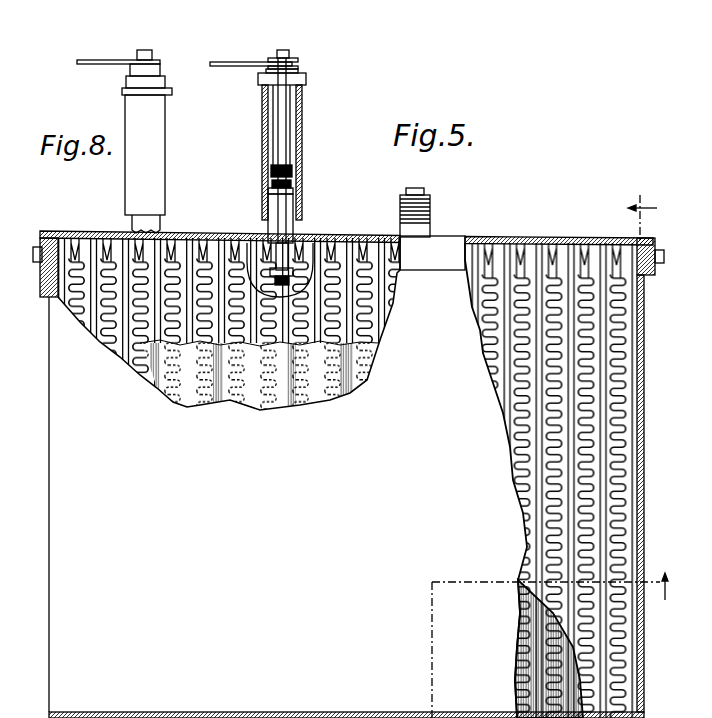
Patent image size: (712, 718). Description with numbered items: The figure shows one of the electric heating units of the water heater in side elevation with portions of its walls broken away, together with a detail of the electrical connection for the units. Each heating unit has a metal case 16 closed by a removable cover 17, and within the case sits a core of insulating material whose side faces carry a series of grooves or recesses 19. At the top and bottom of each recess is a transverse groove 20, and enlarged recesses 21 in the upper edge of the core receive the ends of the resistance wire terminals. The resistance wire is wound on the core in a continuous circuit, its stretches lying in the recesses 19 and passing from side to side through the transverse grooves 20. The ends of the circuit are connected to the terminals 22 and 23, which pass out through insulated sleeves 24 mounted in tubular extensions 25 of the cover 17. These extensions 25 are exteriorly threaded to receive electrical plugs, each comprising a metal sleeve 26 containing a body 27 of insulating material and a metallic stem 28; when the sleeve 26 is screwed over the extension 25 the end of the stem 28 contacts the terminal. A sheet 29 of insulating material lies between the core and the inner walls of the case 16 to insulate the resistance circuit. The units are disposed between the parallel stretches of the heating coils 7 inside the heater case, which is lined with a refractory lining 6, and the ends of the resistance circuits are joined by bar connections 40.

In FIG. 5, the lining 6 is at (550, 645).
In FIG. 5, the heating coils 7 is at (649, 219).
In FIG. 5, the metal case 16 is at (643, 497).
In FIG. 5, the removable cover 17 is at (520, 237).
In FIG. 5, the grooves or recesses 19 is at (128, 305).
In FIG. 5, the transverse groove 20 is at (566, 238).
In FIG. 5, the enlarged recesses 21 is at (288, 256).
In FIG. 5, the terminal 22 is at (277, 256).
In FIG. 5, the terminal 23 is at (416, 190).
In FIG. 5, the insulated sleeves 24 is at (294, 221).
In FIG. 8, the tubular extensions 25 is at (166, 223).
In FIG. 5, the tubular extensions 25 is at (302, 233).
In FIG. 8, the metal sleeve 26 is at (147, 151).
In FIG. 5, the metal sleeve 26 is at (299, 166).
In FIG. 5, the body of insulating material 27 is at (289, 142).
In FIG. 5, the metallic stem 28 is at (283, 117).
In FIG. 5, the sheet of insulating material 29 is at (333, 372).
In FIG. 8, the bar connections 40 is at (107, 64).
In FIG. 5, the bar connections 40 is at (228, 66).